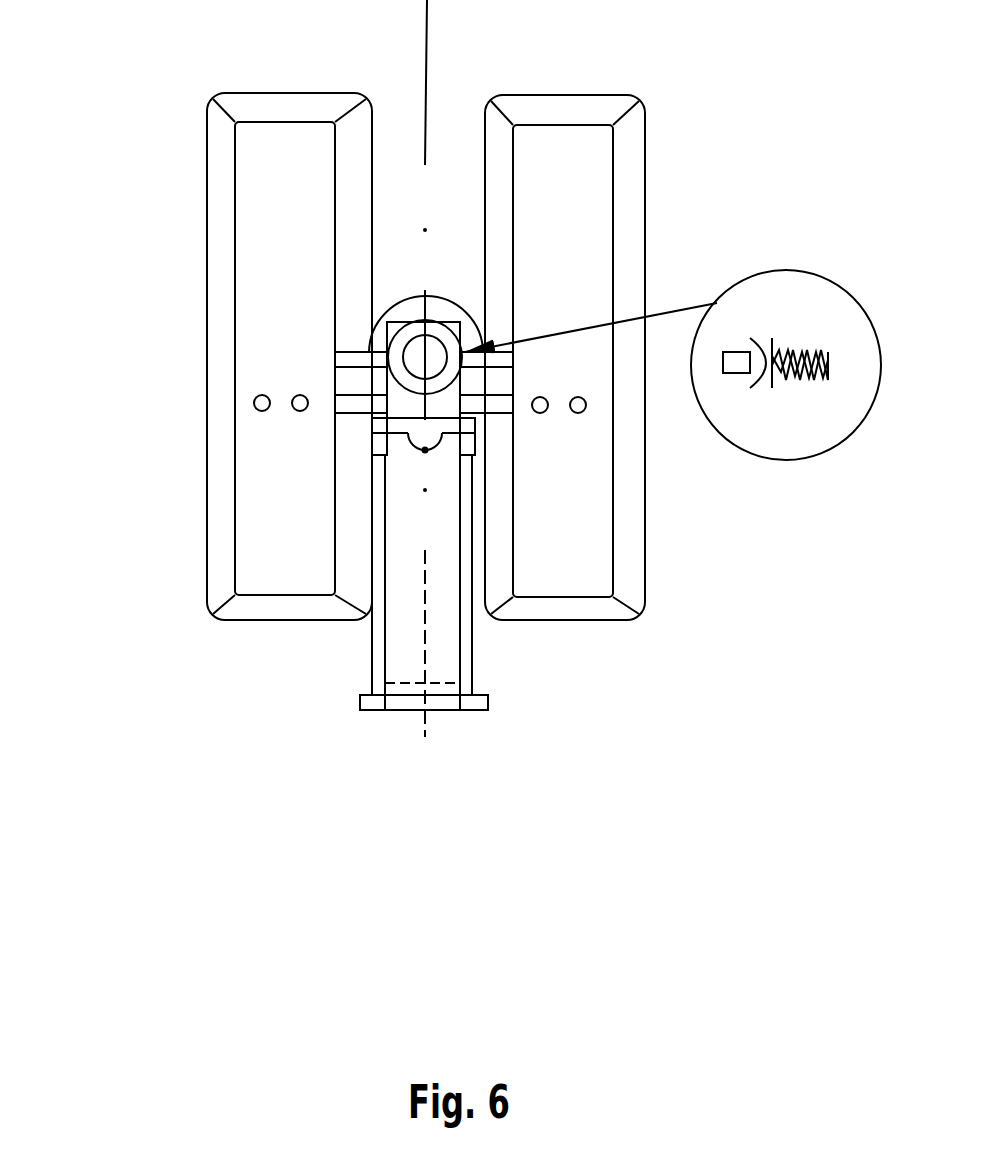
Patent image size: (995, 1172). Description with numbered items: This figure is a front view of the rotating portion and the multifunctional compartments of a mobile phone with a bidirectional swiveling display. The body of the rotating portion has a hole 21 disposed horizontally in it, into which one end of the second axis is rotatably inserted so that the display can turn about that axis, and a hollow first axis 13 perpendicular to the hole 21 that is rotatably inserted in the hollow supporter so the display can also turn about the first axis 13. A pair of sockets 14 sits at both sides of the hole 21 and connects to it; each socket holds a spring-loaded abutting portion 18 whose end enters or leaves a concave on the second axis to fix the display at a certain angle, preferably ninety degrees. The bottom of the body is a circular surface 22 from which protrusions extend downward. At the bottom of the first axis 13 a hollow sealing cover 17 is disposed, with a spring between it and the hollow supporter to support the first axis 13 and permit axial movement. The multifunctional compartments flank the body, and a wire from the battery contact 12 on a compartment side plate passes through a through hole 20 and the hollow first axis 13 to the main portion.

The battery contact 12 is at (526, 485).
The first axis 13 is at (312, 626).
The socket 14 is at (219, 484).
The hollow sealing cover 17 is at (368, 772).
The abutting portion 18 is at (221, 263).
The through hole 20 is at (415, 622).
The hole 21 is at (670, 469).
The circular surface 22 is at (282, 572).